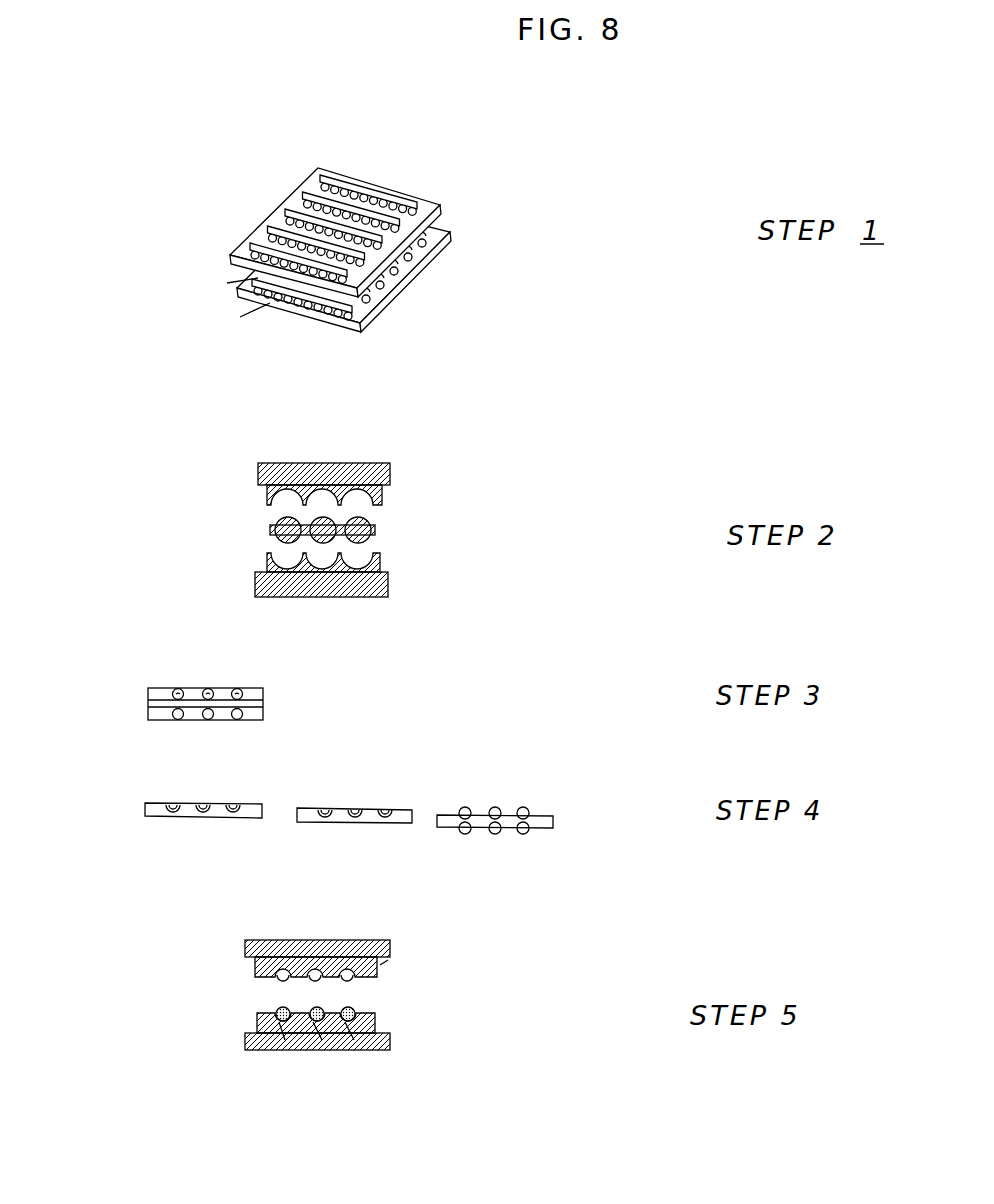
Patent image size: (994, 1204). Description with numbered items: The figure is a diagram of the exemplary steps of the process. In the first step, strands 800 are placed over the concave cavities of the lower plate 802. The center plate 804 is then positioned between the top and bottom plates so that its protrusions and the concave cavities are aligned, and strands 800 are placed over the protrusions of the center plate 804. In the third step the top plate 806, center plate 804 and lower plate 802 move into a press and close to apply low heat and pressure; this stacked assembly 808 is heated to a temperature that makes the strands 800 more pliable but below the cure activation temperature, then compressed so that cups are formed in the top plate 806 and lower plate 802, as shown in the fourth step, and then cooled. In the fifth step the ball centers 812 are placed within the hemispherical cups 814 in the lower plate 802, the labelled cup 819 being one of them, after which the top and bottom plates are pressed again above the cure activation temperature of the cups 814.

The strands 800 is at (407, 226).
The lower plate 802 is at (443, 276).
The center plate 804 is at (237, 226).
The top plate 806 is at (263, 693).
The assembly 808 is at (128, 716).
The ball centers 812 is at (348, 1007).
The hemispherical cups 814 is at (360, 1057).
The cavity 819 is at (285, 1040).